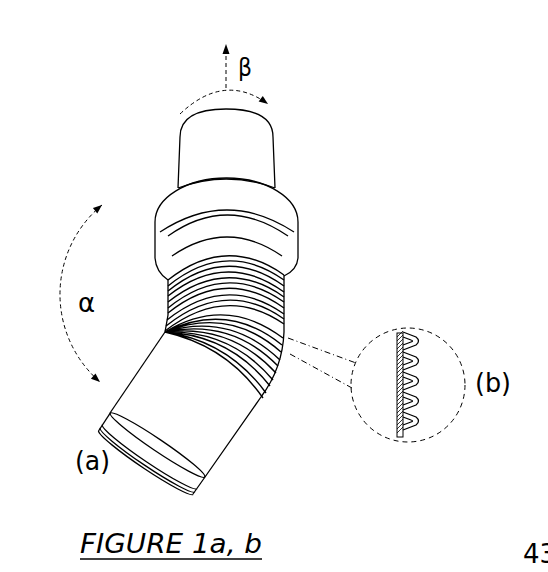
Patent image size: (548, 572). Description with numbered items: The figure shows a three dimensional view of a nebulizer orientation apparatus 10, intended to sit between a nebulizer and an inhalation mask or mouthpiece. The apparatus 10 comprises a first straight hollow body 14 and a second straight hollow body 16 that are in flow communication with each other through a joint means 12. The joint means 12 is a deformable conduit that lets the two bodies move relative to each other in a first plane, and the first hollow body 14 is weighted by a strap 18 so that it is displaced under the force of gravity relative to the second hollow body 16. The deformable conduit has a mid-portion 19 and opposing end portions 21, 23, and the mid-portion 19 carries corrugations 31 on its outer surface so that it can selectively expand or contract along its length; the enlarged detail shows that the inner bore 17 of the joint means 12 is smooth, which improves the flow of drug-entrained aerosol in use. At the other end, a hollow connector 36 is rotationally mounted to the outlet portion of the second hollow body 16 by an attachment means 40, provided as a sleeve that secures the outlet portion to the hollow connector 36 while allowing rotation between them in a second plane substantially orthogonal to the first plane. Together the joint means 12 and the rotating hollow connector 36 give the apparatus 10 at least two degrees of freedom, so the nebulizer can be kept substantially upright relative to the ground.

In FIG. 1a, the nebulizer orientation apparatus 10 is at (322, 215).
In FIG. 1a, the joint means 12 is at (287, 312).
In FIG. 1a, the first straight hollow body 14 is at (222, 450).
In FIG. 1a, the second straight hollow body 16 is at (293, 258).
In FIG. 1b, the inner bore 17 is at (398, 378).
In FIG. 1a, the strap 18 is at (110, 413).
In FIG. 1a, the mid-portion 19 is at (157, 330).
In FIG. 1a, the end portion 21 is at (167, 295).
In FIG. 1a, the end portion 23 is at (275, 355).
In FIG. 1b, the corrugations 31 is at (416, 351).
In FIG. 1a, the hollow connector 36 is at (276, 160).
In FIG. 1a, the attachment means 40 is at (183, 206).